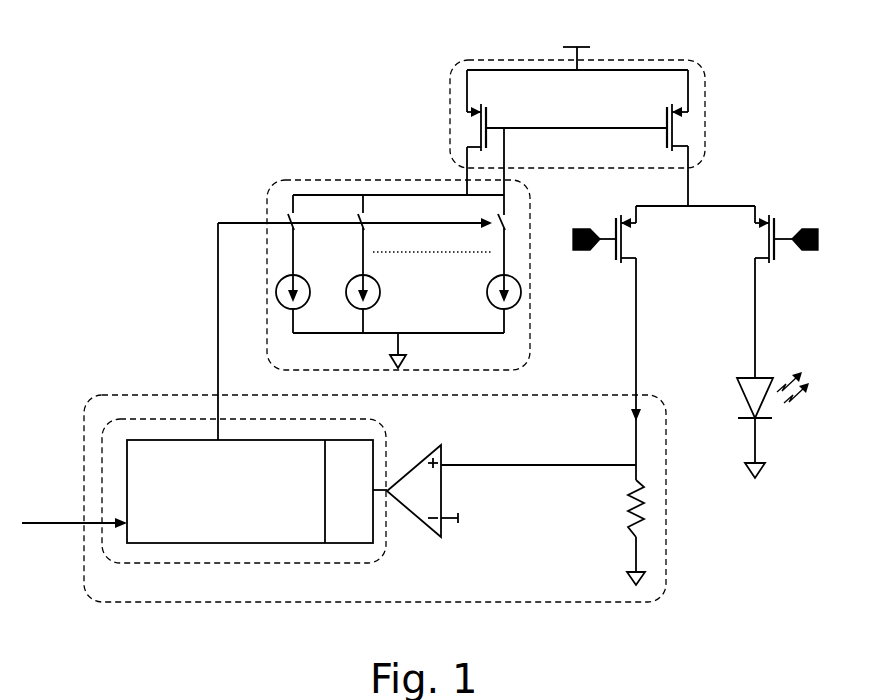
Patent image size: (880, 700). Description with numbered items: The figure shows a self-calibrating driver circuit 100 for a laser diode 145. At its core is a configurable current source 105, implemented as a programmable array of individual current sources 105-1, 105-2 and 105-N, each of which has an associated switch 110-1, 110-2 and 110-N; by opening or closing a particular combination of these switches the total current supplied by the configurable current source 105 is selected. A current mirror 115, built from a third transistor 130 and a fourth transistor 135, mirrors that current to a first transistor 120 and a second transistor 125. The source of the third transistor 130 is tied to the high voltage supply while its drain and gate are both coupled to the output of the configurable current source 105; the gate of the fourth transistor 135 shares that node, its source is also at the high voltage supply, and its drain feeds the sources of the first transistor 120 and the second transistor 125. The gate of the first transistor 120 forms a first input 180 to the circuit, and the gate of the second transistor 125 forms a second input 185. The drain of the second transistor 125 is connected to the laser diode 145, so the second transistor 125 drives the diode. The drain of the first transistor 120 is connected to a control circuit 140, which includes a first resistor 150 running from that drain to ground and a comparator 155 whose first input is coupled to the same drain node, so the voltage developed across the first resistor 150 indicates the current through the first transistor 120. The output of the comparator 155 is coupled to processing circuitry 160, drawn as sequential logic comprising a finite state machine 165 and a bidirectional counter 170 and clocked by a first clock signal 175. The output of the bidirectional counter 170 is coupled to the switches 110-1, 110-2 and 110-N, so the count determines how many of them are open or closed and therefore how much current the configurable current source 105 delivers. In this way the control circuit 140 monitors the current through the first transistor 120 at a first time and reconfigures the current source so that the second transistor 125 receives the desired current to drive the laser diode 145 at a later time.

The self-calibrating driver circuit 100 is at (138, 88).
The configurable current source 105 is at (267, 207).
The individual current source 105-1 is at (276, 292).
The individual current source 105-2 is at (352, 305).
The individual current source 105-N is at (522, 290).
The switch 110-1 is at (290, 213).
The switch 110-2 is at (361, 213).
The switch 110-N is at (500, 213).
The current mirror 115 is at (480, 60).
The first transistor 120 is at (624, 218).
The second transistor 125 is at (767, 218).
The third transistor 130 is at (481, 128).
The fourth transistor 135 is at (676, 108).
The control circuit 140 is at (145, 603).
The laser diode 145 is at (756, 419).
The first resistor 150 is at (640, 505).
The comparator 155 is at (425, 494).
The processing circuitry 160 is at (227, 563).
The finite state machine 165 is at (350, 525).
The bidirectional counter 170 is at (143, 469).
The first clock signal 175 is at (48, 523).
The first input 180 is at (583, 229).
The second input 185 is at (808, 229).